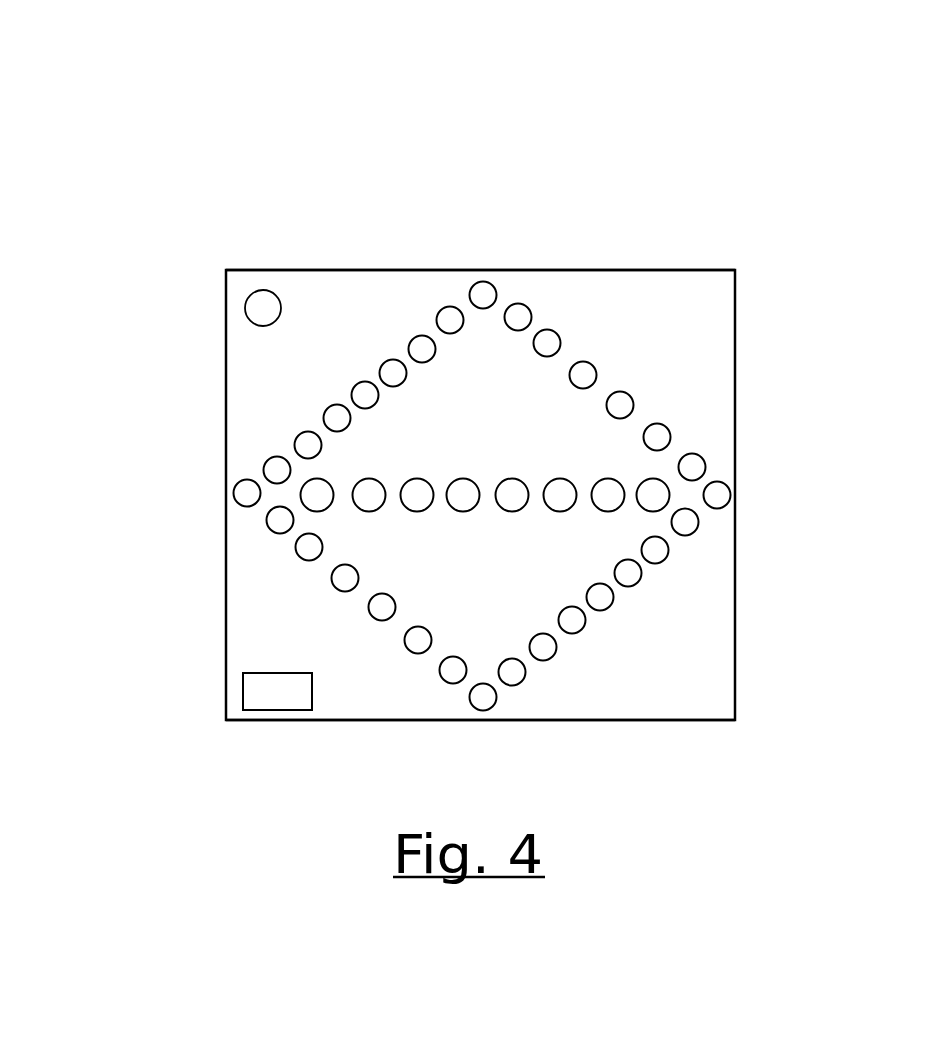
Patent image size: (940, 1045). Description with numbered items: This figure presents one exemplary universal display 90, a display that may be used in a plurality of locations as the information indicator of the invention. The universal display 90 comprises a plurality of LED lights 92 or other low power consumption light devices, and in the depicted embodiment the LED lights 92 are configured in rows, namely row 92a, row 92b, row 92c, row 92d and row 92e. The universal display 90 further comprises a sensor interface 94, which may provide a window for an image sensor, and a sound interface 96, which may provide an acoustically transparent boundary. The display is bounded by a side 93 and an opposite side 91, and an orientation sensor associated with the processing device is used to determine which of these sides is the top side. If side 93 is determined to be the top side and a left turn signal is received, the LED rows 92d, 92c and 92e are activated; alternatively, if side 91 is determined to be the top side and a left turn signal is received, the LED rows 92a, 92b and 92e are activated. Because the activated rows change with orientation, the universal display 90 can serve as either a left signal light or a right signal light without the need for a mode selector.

The universal display 90 is at (762, 235).
The side 91 is at (582, 722).
The side 93 is at (340, 271).
The sensor interface 94 is at (250, 305).
The sound interface 96 is at (253, 683).
The LED lights 92 is at (532, 305).
The row of LED lights 92a is at (622, 368).
The row of LED lights 92b is at (613, 610).
The row of LED lights 92c is at (366, 645).
The row of LED lights 92d is at (312, 392).
The row of LED lights 92e is at (508, 432).